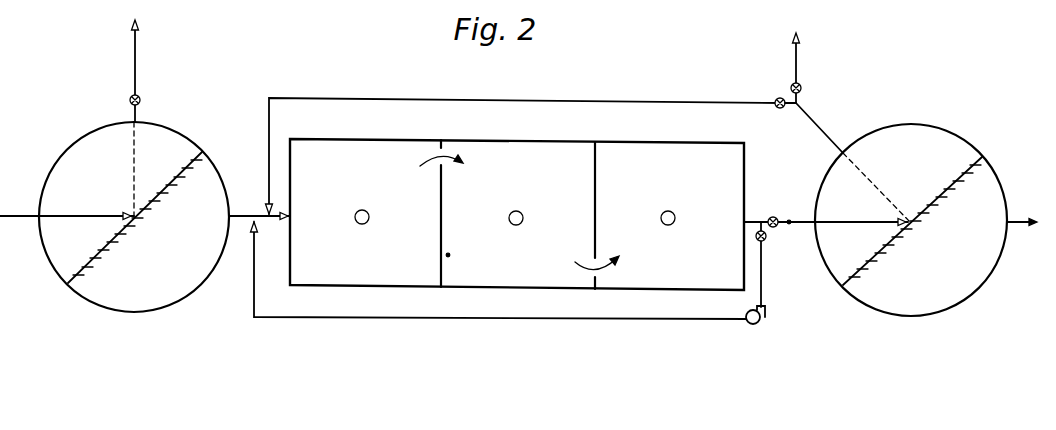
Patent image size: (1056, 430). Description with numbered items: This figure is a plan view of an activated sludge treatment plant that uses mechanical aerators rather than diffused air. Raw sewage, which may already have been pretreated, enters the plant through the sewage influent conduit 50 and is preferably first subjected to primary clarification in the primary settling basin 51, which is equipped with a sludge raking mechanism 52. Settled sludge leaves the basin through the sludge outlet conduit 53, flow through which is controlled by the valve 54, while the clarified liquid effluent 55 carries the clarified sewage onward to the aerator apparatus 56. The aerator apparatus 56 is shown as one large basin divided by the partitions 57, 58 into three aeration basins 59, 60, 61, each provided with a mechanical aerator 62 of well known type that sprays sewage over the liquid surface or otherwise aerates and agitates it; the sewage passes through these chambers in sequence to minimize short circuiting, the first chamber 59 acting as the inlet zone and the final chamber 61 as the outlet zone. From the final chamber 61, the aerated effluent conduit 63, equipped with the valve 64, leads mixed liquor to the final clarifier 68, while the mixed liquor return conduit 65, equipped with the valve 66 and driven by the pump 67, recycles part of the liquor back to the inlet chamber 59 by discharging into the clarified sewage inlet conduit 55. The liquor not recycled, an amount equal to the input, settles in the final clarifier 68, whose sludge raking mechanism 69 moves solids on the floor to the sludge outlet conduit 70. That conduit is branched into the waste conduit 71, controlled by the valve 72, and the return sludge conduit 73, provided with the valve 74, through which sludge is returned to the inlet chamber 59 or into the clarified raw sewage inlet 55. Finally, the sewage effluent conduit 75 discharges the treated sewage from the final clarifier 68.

The sewage influent conduit 50 is at (23, 213).
The primary settling basin 51 is at (144, 311).
The sludge raking mechanism 52 is at (160, 203).
The sludge outlet conduit 53 is at (140, 114).
The valve 54 is at (128, 97).
The clarified liquid effluent 55 is at (243, 215).
The aerator apparatus 56 is at (491, 289).
The partition 57 is at (439, 240).
The partition 58 is at (597, 197).
The aeration basin 59 is at (375, 140).
The aeration basin 60 is at (516, 141).
The aeration basin 61 is at (674, 143).
The mechanical aerator 62 is at (362, 225).
The aerated effluent conduit 63 is at (800, 221).
The valve 64 is at (778, 227).
The mixed liquor return conduit 65 is at (652, 321).
The valve 66 is at (765, 241).
The pump 67 is at (762, 316).
The final clarifier 68 is at (966, 297).
The sludge raking mechanism 69 is at (940, 197).
The sludge outlet conduit 70 is at (823, 128).
The waste conduit 71 is at (794, 52).
The valve 72 is at (801, 87).
The return sludge conduit 73 is at (727, 101).
The valve 74 is at (780, 110).
The sewage effluent conduit 75 is at (1018, 220).